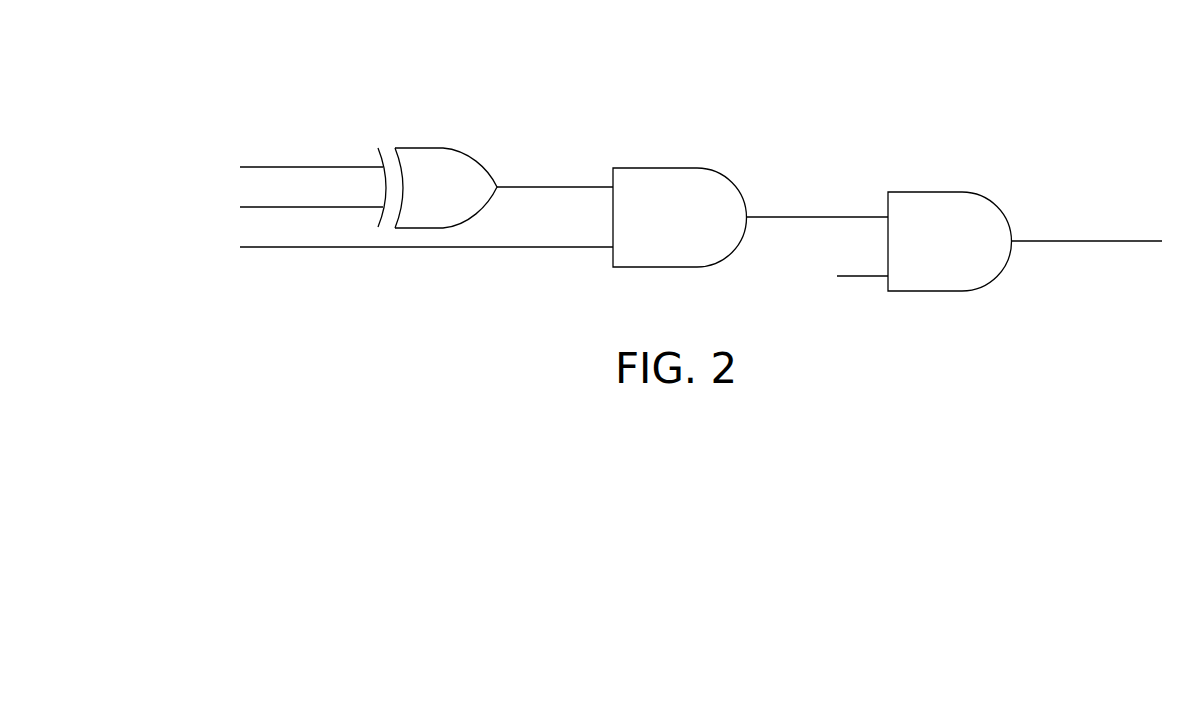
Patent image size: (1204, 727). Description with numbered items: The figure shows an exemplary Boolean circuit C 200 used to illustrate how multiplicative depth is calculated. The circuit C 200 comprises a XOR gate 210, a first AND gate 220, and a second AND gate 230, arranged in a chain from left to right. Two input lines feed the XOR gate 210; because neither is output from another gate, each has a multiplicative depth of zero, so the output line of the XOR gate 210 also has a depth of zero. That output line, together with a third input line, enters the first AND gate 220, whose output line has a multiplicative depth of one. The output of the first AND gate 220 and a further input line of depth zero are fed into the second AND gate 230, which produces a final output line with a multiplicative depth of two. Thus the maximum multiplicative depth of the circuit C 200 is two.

The circuit C 200 is at (980, 88).
The XOR gate 210 is at (419, 147).
The first AND gate 220 is at (658, 167).
The second AND gate 230 is at (923, 191).